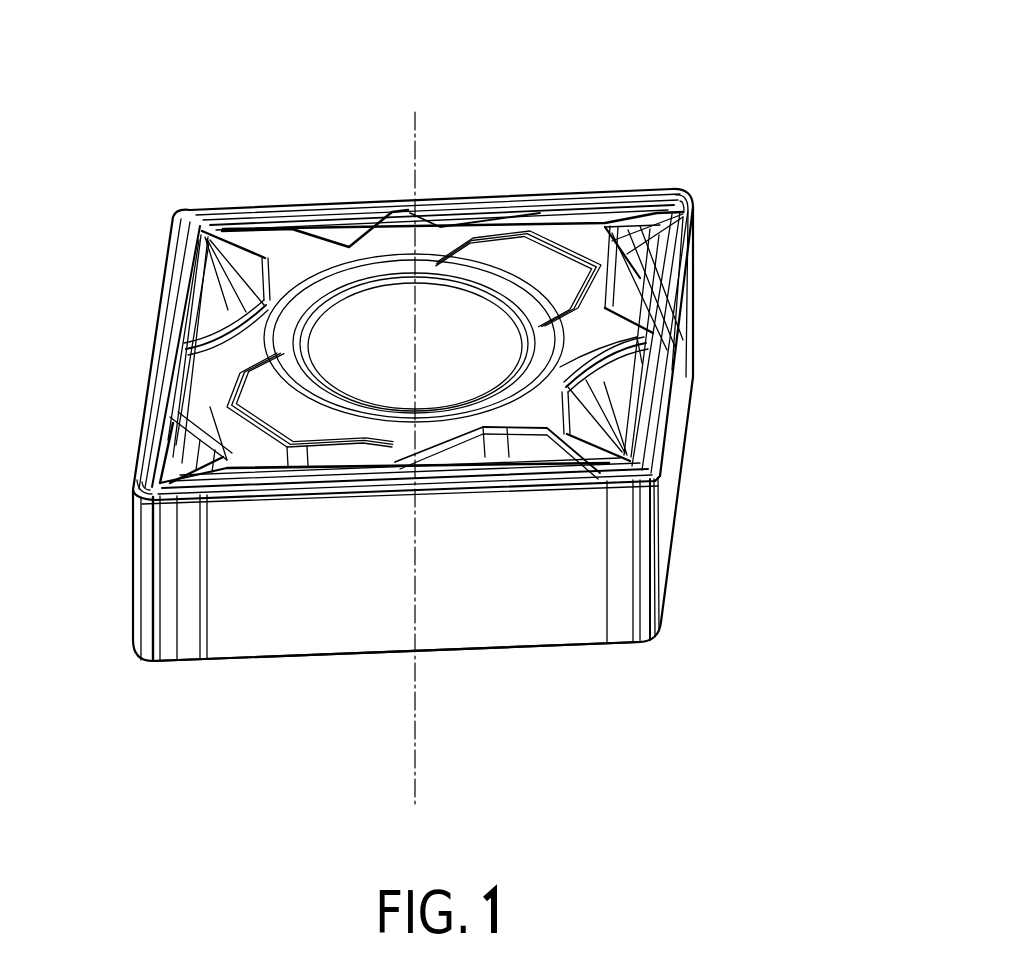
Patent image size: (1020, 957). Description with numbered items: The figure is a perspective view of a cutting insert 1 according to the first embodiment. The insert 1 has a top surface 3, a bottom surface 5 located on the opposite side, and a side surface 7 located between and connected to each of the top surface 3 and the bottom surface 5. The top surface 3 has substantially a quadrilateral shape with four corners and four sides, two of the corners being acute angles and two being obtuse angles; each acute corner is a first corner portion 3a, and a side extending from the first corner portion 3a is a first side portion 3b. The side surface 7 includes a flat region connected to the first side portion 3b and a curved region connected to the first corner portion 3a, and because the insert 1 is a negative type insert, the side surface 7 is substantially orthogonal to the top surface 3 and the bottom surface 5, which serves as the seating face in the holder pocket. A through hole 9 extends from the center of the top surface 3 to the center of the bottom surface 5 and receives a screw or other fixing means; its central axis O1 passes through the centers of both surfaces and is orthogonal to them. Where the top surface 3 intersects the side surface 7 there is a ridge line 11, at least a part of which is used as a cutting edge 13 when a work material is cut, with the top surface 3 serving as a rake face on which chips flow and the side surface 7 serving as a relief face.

The insert 1 is at (316, 92).
The central axis O1 is at (414, 441).
The top surface 3 is at (600, 328).
The first corner portion 3a is at (689, 190).
The first side portion 3b is at (512, 193).
The bottom surface 5 is at (570, 650).
The side surface 7 is at (673, 437).
The through hole 9 is at (356, 345).
The ridge line 11 is at (642, 187).
The cutting edge 13 is at (434, 426).